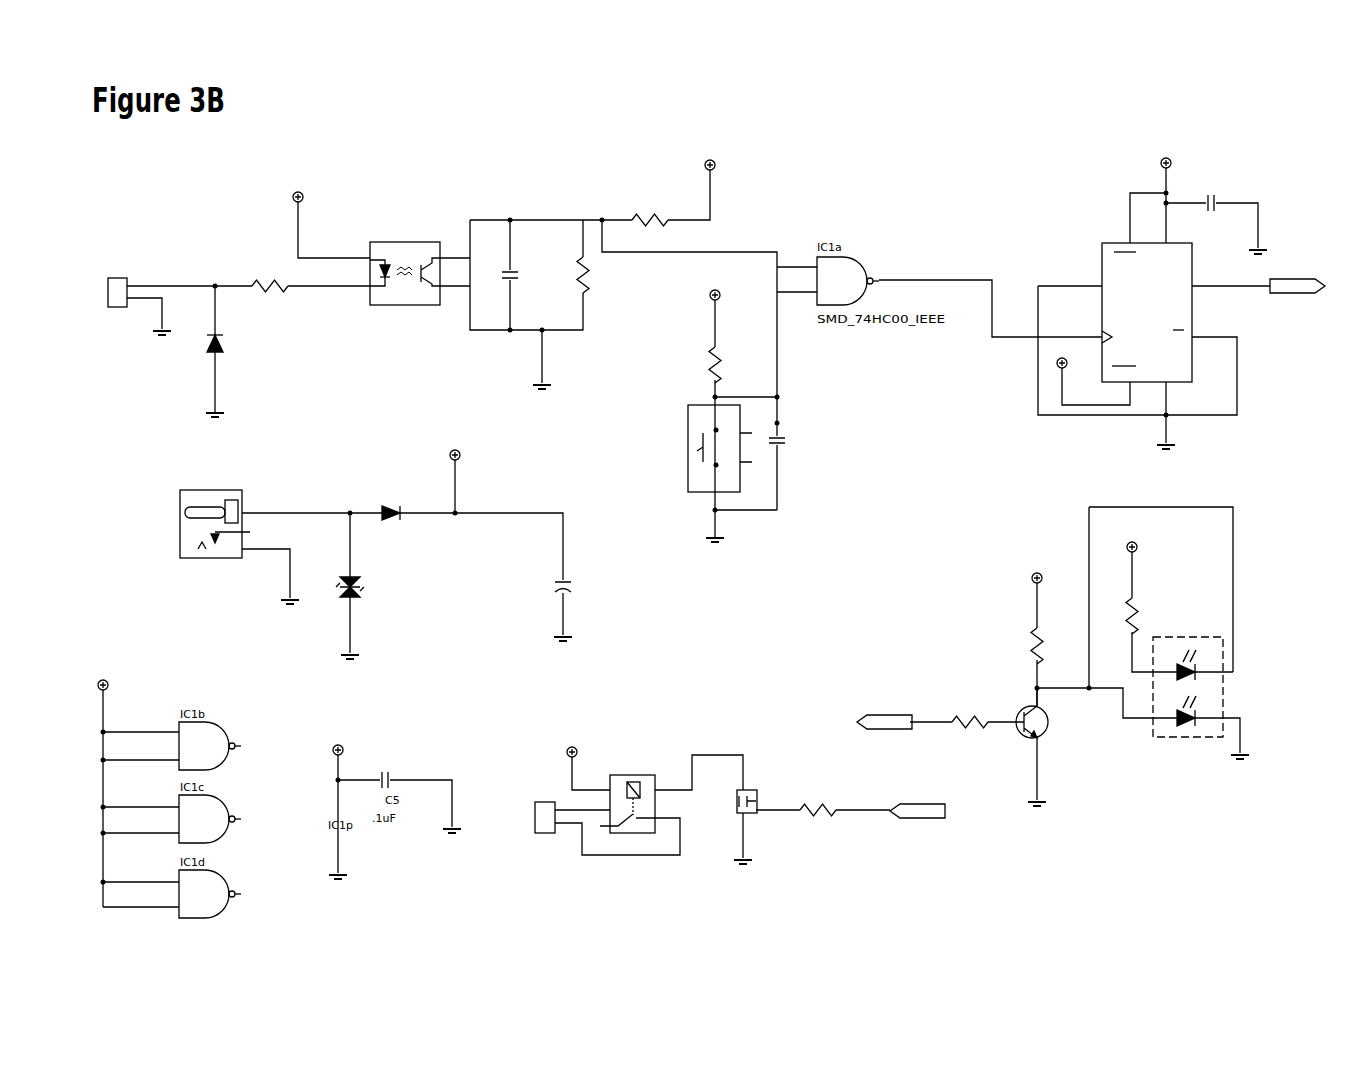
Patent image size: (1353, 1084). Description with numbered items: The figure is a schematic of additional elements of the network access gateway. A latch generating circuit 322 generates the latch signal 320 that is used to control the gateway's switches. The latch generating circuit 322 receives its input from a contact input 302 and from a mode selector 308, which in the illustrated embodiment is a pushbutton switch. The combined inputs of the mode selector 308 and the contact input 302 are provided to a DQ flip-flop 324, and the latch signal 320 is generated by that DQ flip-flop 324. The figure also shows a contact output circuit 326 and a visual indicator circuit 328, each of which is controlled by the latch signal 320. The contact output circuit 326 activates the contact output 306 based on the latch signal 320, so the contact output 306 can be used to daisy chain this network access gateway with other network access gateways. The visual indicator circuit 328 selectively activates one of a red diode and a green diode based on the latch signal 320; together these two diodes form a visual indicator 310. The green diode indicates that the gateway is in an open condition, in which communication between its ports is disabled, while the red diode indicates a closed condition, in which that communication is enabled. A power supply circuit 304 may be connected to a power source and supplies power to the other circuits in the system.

The contact input 302 is at (122, 309).
The power supply circuit 304 is at (158, 478).
The contact output 306 is at (532, 812).
The mode selector 308 is at (688, 424).
The visual indicator 310 is at (1223, 692).
The latch signal 320 is at (843, 713).
The latch generating circuit 322 is at (170, 226).
The DQ flip-flop 324 is at (1100, 264).
The contact output circuit 326 is at (521, 755).
The visual indicator circuit 328 is at (976, 627).